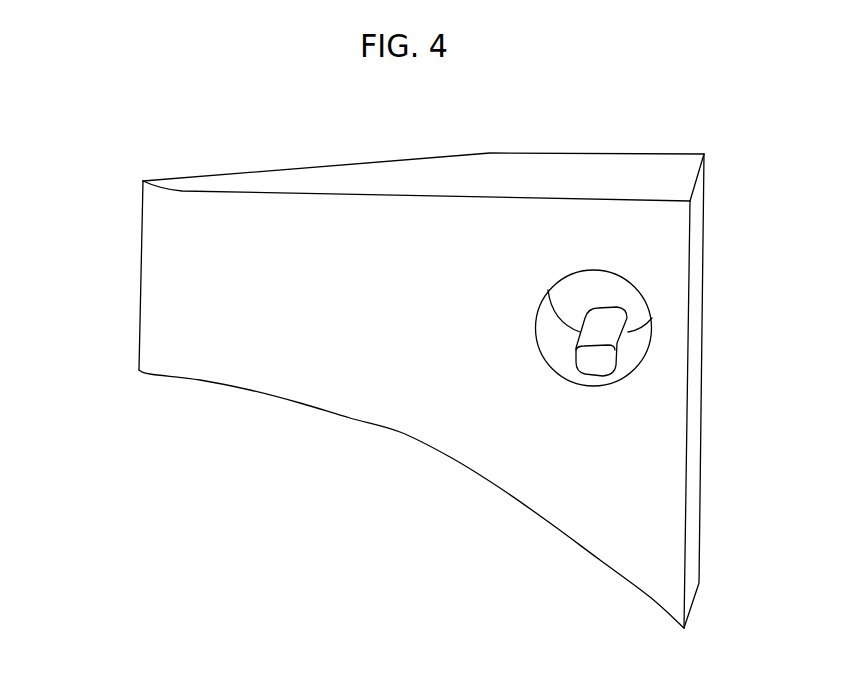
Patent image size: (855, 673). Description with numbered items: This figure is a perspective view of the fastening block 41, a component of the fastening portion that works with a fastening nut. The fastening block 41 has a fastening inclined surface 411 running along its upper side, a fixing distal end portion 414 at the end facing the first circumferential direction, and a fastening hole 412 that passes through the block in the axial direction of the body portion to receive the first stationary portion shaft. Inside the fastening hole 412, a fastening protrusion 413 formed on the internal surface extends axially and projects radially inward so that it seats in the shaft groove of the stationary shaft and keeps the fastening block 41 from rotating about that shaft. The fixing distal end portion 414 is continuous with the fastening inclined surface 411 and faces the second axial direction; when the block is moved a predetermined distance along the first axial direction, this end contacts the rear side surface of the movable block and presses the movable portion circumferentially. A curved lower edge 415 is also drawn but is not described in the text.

The fastening block 41 is at (410, 367).
The fastening inclined surface 411 is at (232, 172).
The fastening hole 412 is at (600, 289).
The fastening protrusion 413 is at (617, 342).
The fixing distal end portion 414 is at (148, 275).
The curved bottom edge 415 is at (426, 446).